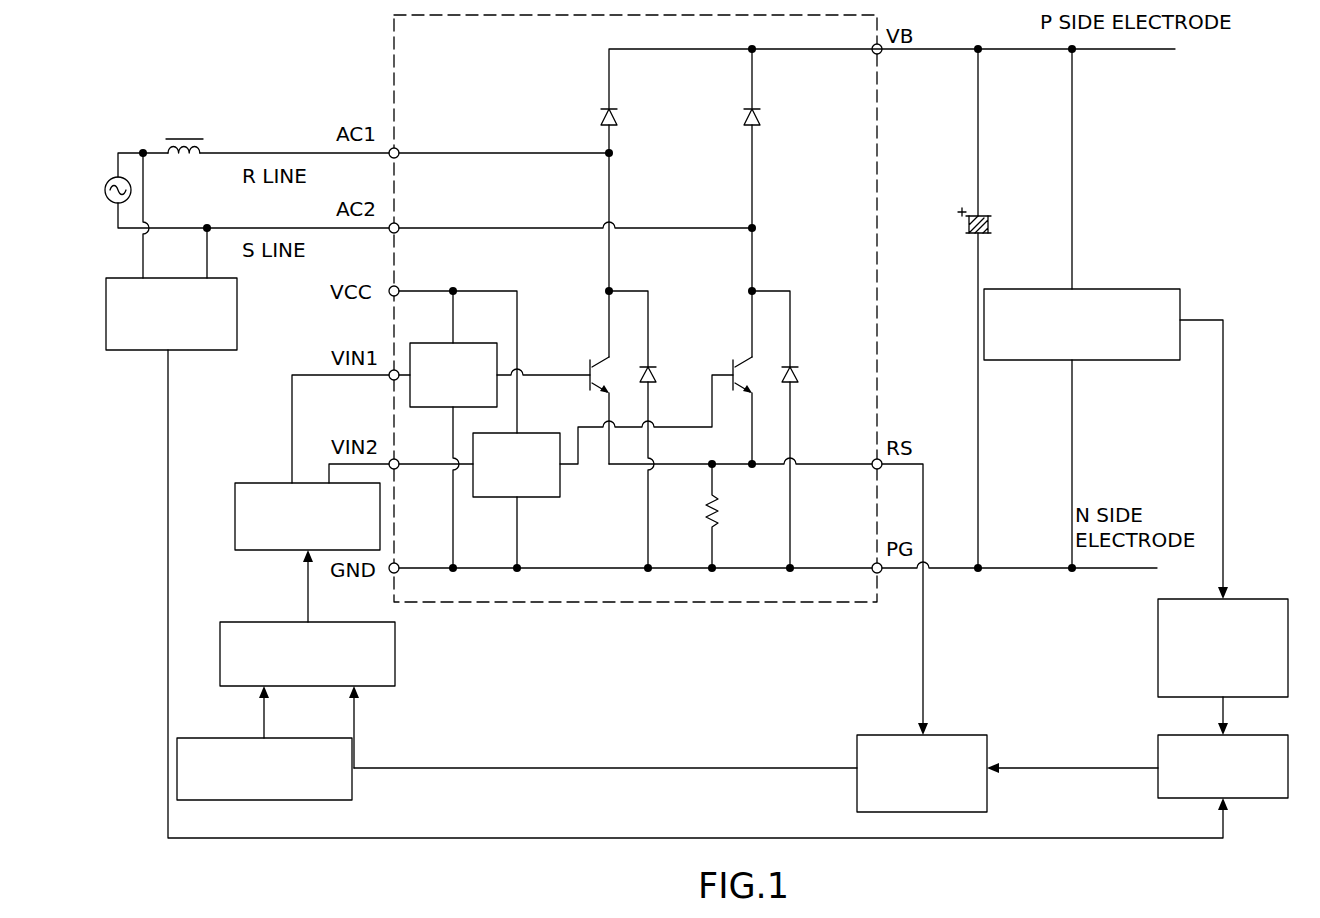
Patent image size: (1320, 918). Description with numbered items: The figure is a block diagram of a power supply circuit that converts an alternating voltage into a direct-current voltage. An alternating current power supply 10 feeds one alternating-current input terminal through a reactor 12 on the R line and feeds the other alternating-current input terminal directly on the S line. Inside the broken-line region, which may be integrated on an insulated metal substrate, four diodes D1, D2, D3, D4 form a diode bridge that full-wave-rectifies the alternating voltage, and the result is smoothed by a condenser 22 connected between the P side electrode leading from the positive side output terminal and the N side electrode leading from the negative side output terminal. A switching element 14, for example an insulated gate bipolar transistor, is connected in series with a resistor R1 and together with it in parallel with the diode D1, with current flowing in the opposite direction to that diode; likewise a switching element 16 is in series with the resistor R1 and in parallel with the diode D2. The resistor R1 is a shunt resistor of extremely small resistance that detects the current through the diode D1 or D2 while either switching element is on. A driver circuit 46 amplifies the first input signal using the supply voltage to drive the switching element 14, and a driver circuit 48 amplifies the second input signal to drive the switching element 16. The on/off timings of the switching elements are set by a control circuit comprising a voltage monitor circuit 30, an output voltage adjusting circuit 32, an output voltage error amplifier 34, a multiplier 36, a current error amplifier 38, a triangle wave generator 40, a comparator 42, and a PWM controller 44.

The alternating current power supply 10 is at (108, 180).
The reactor 12 is at (190, 138).
The switching element 14 is at (603, 355).
The switching element 16 is at (748, 355).
The condenser 22 is at (985, 214).
The voltage monitor circuit 30 is at (210, 351).
The output voltage adjusting circuit 32 is at (1117, 361).
The output voltage error amplifier 34 is at (1245, 598).
The multiplier 36 is at (1170, 735).
The current error amplifier 38 is at (950, 735).
The triangle wave generator 40 is at (225, 738).
The comparator 42 is at (250, 622).
The PWM controller 44 is at (262, 483).
The driver circuit 46 is at (410, 350).
The driver circuit 48 is at (540, 497).
The diode D1 is at (657, 374).
The diode D2 is at (799, 374).
The diode D3 is at (619, 117).
The diode D4 is at (762, 117).
The resistor R1 is at (730, 516).